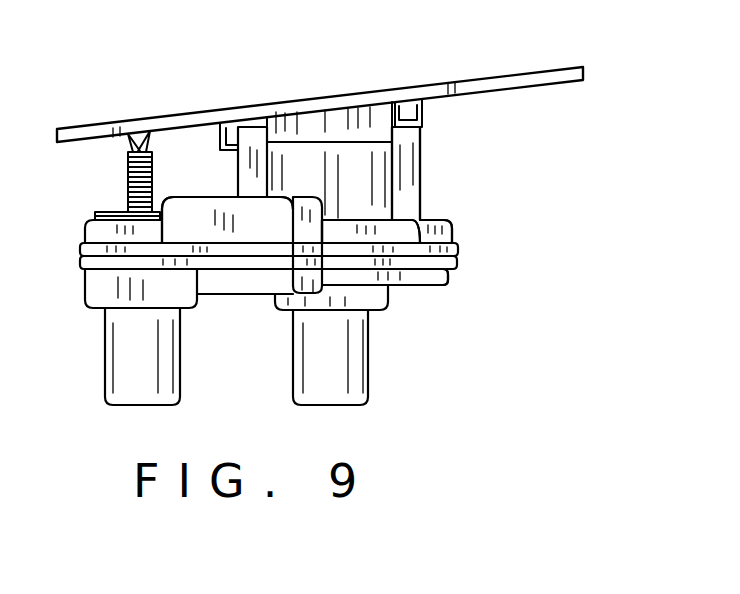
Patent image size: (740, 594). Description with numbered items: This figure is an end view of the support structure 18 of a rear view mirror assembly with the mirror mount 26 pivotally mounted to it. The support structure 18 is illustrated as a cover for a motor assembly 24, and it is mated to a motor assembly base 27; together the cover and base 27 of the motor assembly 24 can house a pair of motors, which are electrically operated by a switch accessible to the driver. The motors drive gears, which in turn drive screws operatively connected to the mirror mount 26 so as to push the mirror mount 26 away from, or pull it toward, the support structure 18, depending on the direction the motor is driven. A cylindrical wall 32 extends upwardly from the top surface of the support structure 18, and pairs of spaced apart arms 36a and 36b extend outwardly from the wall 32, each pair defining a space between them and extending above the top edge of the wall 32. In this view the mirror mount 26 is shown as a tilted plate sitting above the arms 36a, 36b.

The support structure 18 is at (424, 154).
The motor assembly 24 is at (476, 188).
The mirror mount 26 is at (571, 60).
The motor assembly base 27 is at (458, 280).
The cylindrical wall 32 is at (370, 204).
The arm 36a is at (415, 143).
The arm 36b is at (250, 158).